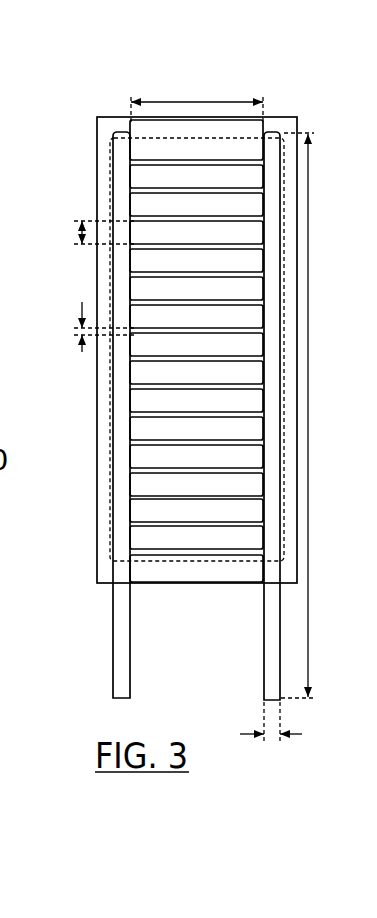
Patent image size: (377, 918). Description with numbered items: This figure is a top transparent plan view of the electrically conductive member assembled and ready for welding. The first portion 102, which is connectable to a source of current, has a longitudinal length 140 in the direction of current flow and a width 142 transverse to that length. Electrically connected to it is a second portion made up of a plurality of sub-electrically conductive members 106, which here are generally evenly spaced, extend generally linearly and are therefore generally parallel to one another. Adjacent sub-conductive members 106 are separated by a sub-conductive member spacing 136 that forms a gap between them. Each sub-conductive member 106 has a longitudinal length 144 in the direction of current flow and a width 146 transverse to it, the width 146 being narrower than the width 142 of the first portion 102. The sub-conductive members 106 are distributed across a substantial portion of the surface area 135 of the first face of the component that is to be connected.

The first portion 102 is at (268, 601).
The sub-electrically conductive members 106 is at (134, 503).
The surface area 135 is at (112, 461).
The sub-conductive member spacing 136 is at (78, 233).
The longitudinal length 140 is at (308, 418).
The width 142 is at (302, 735).
The longitudinal length 144 is at (180, 101).
The width 146 is at (80, 351).